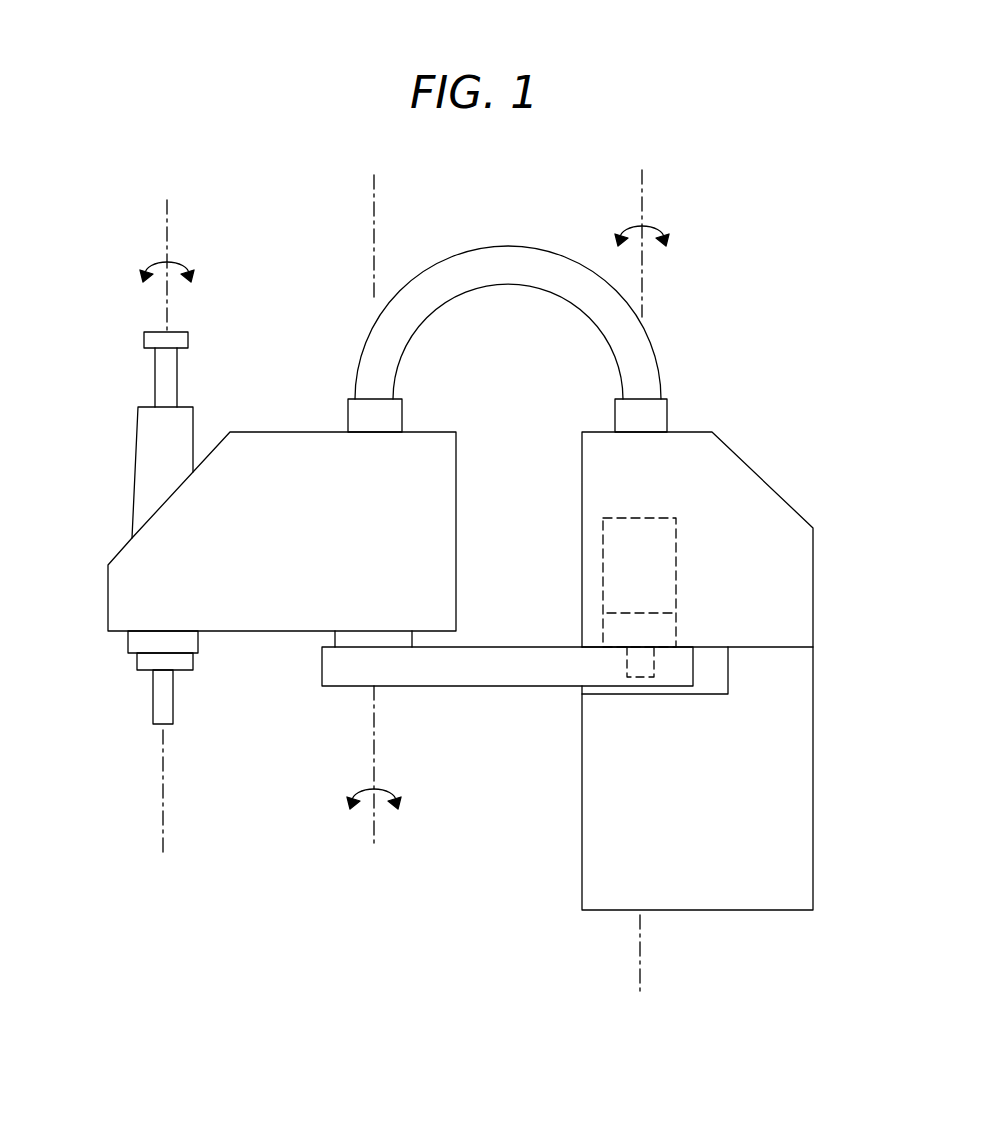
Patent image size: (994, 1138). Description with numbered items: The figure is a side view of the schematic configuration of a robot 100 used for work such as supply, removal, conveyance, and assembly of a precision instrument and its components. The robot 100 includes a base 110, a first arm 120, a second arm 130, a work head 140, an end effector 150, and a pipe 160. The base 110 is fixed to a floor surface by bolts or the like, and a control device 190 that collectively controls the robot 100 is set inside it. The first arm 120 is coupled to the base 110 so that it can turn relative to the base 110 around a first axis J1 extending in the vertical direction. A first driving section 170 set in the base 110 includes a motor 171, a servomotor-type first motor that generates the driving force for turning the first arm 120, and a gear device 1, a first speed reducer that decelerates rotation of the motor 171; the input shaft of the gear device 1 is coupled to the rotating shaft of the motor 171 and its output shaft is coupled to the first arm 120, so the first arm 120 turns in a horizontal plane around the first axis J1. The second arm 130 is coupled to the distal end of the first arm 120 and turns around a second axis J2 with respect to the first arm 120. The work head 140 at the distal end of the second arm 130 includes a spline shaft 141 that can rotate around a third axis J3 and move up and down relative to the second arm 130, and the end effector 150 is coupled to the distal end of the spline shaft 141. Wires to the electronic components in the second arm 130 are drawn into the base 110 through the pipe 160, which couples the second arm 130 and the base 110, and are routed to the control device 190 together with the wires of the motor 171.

The robot 100 is at (707, 214).
The base 110 is at (813, 772).
The first arm 120 is at (442, 688).
The second arm 130 is at (457, 470).
The work head 140 is at (137, 450).
The spline shaft 141 is at (158, 375).
The end effector 150 is at (153, 700).
The pipe 160 is at (483, 260).
The first driving section 170 is at (603, 518).
The motor 171 is at (602, 567).
The gear device 1 is at (602, 632).
The control device 190 is at (705, 833).
The first axis J1 is at (642, 195).
The second axis J2 is at (375, 822).
The third axis J3 is at (168, 222).